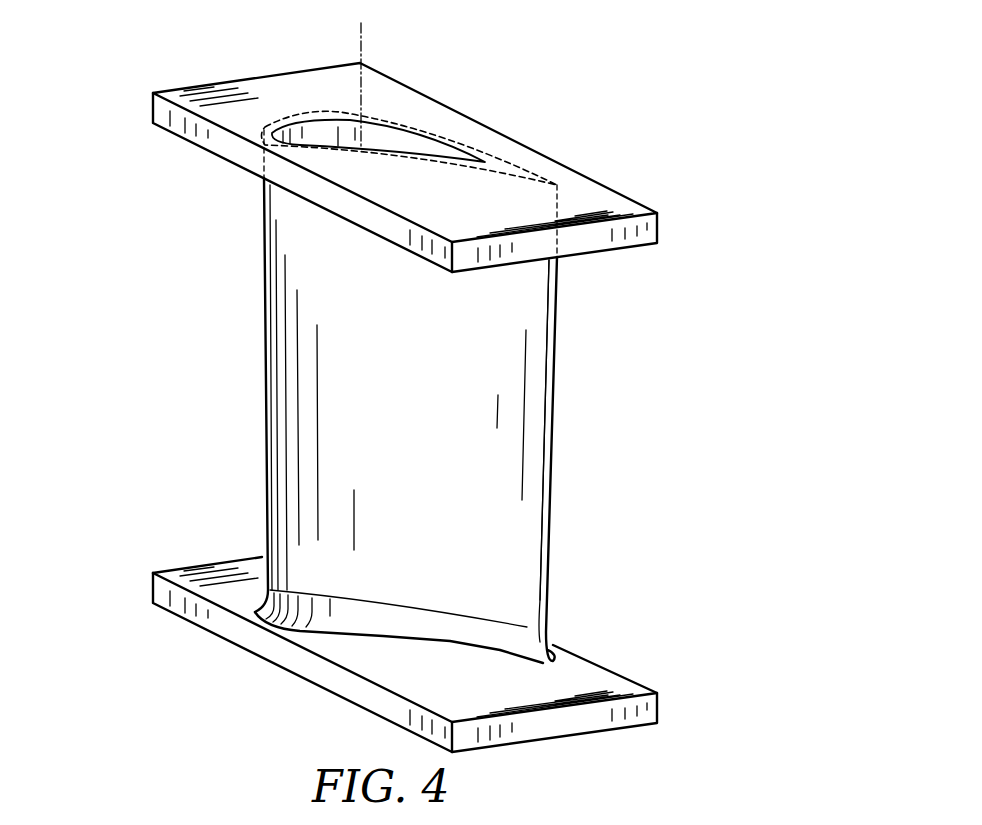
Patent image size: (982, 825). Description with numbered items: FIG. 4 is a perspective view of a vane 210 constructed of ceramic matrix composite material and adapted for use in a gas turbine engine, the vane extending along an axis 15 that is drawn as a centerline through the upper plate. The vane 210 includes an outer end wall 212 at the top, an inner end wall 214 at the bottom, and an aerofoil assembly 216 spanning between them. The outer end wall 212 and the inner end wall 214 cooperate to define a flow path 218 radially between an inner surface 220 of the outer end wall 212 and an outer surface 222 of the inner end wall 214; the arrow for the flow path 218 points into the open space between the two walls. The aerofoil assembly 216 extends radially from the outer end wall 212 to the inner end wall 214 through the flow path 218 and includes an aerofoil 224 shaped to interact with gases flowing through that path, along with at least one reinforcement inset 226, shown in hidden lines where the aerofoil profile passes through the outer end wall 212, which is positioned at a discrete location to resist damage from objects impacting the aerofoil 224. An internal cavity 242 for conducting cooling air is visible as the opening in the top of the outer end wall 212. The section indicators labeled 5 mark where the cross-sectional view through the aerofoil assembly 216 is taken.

The vane 210 is at (420, 386).
The outer end wall 212 is at (376, 148).
The inner end wall 214 is at (341, 621).
The aerofoil assembly 216 is at (478, 396).
The flow path 218 is at (155, 434).
The inner surface of the outer end wall 220 is at (193, 140).
The outer surface of the inner end wall 222 is at (200, 575).
The aerofoil 224 is at (548, 510).
The reinforcement inset 226 is at (543, 175).
The internal cavity 242 is at (382, 135).
The axis 15 is at (362, 55).
The section line 5- 5 is at (253, 380).